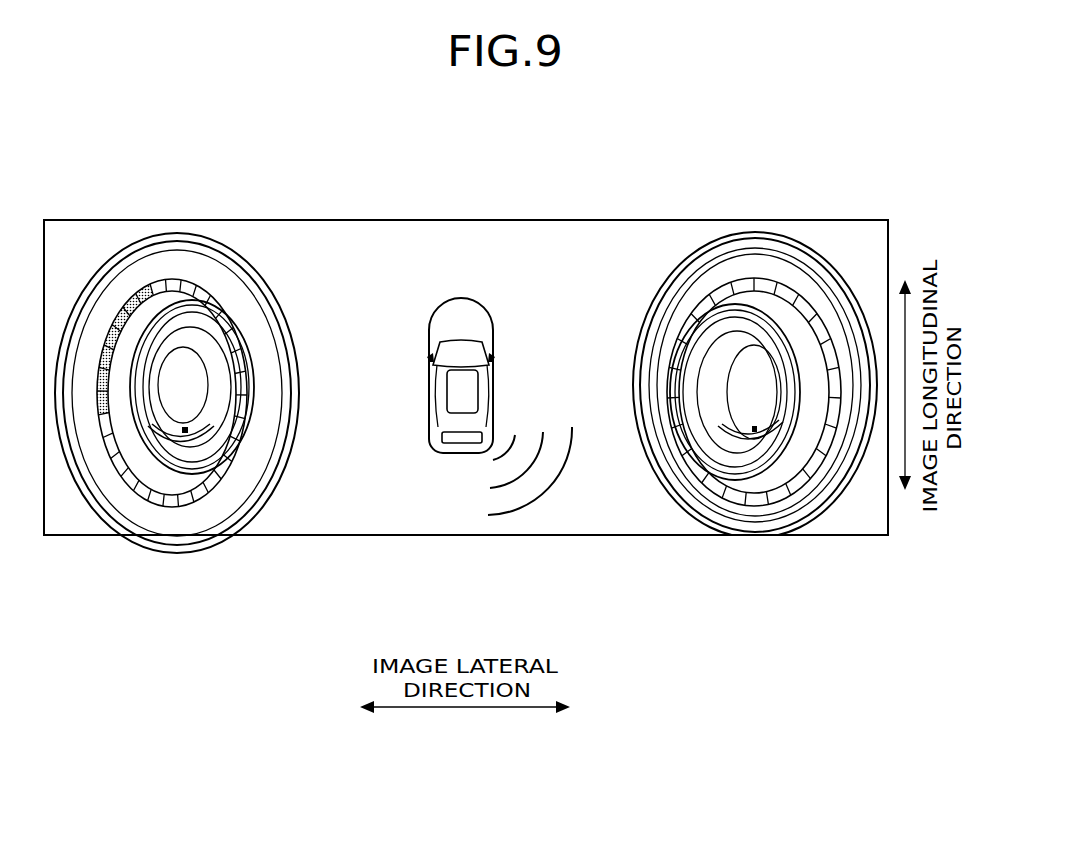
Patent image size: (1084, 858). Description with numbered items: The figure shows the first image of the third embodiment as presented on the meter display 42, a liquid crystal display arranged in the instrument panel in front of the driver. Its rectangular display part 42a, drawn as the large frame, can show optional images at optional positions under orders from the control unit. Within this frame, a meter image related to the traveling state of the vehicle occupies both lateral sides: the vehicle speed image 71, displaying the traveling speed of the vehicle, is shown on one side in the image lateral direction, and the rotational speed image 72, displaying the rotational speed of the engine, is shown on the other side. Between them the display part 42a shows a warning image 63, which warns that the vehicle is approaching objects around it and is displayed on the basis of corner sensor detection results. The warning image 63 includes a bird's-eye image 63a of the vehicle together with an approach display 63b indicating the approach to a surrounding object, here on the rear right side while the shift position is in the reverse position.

The meter display 42 is at (563, 221).
The display part 42a is at (380, 240).
The vehicle speed image 71 is at (239, 249).
The rotational speed image 72 is at (800, 237).
The warning image 63 is at (487, 470).
The bird's-eye image 63a is at (462, 455).
The approach display 63b is at (530, 512).